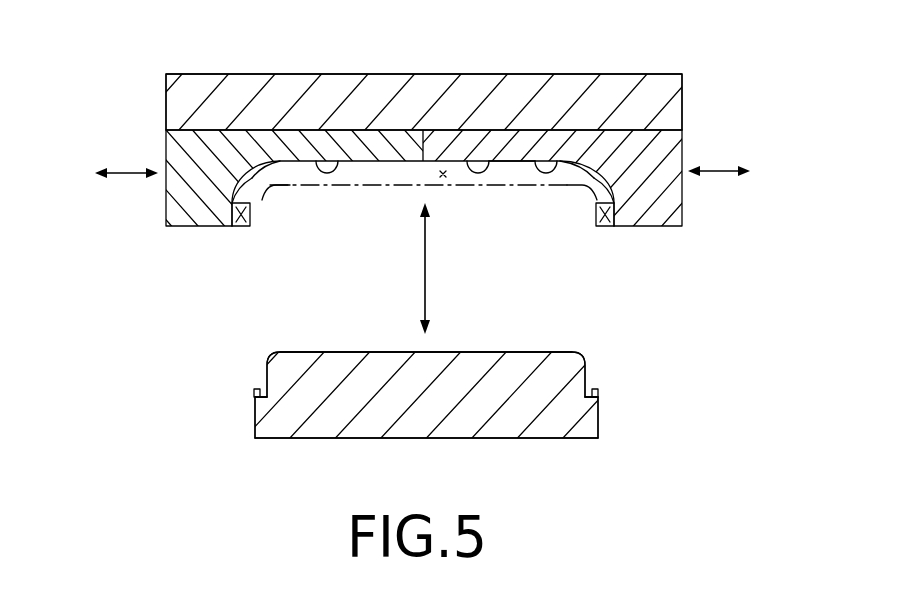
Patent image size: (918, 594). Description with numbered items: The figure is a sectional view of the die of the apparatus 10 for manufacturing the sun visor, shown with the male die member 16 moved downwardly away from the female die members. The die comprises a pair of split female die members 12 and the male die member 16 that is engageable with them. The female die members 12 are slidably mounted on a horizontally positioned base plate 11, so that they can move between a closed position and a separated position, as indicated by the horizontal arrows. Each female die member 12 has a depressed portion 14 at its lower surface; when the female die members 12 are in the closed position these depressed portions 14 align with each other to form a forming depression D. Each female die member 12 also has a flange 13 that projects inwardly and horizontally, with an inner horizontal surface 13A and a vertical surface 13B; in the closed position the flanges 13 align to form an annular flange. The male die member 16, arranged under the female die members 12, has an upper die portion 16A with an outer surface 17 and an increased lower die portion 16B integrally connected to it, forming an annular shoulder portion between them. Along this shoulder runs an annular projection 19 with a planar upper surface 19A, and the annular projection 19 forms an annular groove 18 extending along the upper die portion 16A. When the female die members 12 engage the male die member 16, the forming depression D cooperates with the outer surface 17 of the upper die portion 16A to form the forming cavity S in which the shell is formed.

The apparatus 10 is at (664, 327).
The base plate 11 is at (280, 90).
The female die member 12 is at (178, 157).
The flange 13 is at (240, 217).
The inner horizontal surface 13A is at (263, 194).
The vertical surface 13B is at (256, 210).
The depressed portion 14 is at (337, 161).
The forming cavity S is at (443, 170).
The forming depression D is at (498, 161).
The male die member 16 is at (512, 428).
The upper die portion 16A is at (518, 370).
The lower die portion 16B is at (412, 424).
The outer surface 17 is at (372, 186).
The annular groove 18 is at (262, 418).
The annular projection 19 is at (250, 394).
The planar upper surface 19A is at (258, 388).